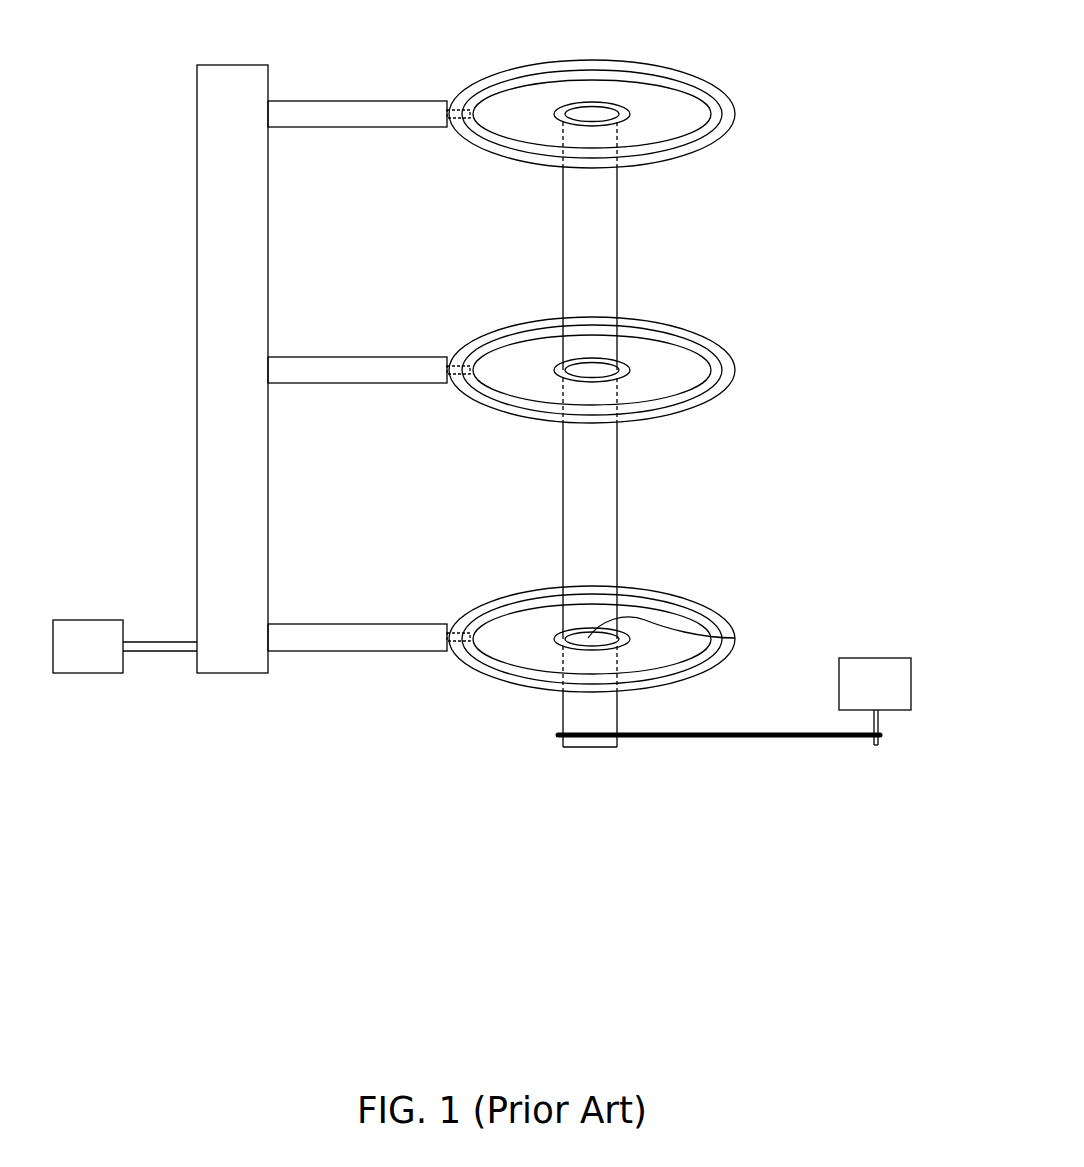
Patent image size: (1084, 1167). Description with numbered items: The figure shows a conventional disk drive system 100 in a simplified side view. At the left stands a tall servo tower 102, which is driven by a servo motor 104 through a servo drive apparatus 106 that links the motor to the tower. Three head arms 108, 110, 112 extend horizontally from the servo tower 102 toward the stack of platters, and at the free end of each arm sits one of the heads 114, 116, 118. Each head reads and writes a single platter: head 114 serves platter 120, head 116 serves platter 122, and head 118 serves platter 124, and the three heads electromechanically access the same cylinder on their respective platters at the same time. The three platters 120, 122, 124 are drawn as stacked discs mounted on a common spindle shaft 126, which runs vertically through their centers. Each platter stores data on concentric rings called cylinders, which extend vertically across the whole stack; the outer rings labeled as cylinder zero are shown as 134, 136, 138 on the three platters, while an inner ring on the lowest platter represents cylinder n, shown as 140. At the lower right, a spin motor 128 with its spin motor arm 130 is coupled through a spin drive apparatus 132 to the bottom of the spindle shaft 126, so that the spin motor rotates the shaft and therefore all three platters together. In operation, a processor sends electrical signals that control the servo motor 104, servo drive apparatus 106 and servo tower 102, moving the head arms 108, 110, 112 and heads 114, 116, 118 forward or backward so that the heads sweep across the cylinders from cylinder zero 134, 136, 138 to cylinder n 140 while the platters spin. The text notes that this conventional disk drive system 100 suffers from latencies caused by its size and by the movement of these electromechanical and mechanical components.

The conventional disk drive system 100 is at (113, 735).
The servo tower 102 is at (235, 65).
The servo motor 104 is at (92, 620).
The servo drive apparatus 106 is at (162, 642).
The head arm 108 is at (360, 101).
The head arm 110 is at (360, 357).
The head arm 112 is at (360, 624).
The head 114 is at (455, 128).
The head 116 is at (455, 385).
The head 118 is at (455, 652).
The platter 120 is at (523, 62).
The platter 122 is at (482, 330).
The platter 124 is at (482, 599).
The spindle shaft 126 is at (618, 203).
The spin motor 128 is at (872, 658).
The spin motor arm 130 is at (879, 722).
The spin drive apparatus 132 is at (762, 733).
The cylinder 0 134 is at (660, 80).
The cylinder 0 136 is at (660, 336).
The cylinder 0 138 is at (660, 604).
The cylinder n 140 is at (705, 637).